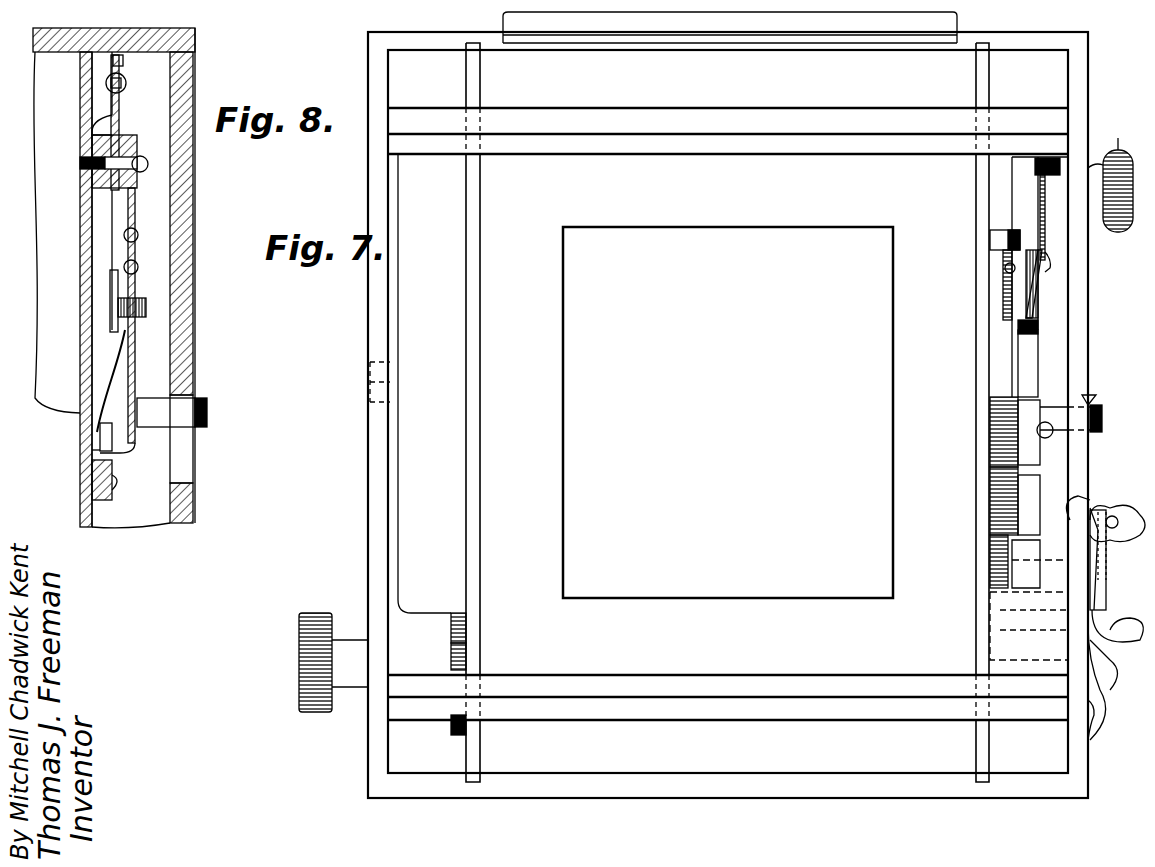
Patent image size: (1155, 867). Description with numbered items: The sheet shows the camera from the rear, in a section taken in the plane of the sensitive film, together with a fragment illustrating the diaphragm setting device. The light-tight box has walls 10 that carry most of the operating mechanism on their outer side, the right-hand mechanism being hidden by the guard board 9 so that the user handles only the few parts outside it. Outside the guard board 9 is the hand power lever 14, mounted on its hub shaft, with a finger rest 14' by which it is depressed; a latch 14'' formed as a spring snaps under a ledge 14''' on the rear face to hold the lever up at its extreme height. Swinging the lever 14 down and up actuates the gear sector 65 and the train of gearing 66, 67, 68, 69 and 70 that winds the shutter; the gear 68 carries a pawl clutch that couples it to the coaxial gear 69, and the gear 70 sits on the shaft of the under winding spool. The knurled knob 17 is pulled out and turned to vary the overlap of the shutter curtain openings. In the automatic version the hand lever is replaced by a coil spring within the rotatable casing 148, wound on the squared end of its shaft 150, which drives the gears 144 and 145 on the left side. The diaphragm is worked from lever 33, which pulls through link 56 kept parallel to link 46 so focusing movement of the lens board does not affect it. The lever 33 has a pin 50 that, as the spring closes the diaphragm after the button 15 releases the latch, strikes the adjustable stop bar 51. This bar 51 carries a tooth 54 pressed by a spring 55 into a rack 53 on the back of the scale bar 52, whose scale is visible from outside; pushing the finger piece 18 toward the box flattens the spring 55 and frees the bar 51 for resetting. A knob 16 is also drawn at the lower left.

In FIG. 8, the guard board 9 is at (193, 284).
In FIG. 7, the guard board 9 is at (1086, 320).
In FIG. 8, the camera box walls 10 is at (80, 277).
In FIG. 7, the camera box walls 10 is at (480, 352).
In FIG. 7, the hand power lever 14 is at (1121, 622).
In FIG. 7, the finger rest 14' is at (1116, 452).
In FIG. 7, the latch 14'' is at (1108, 488).
In FIG. 7, the ledge 14''' is at (1118, 545).
In FIG. 7, the button 15 is at (1090, 745).
In FIG. 7, the knob 16 is at (299, 643).
In FIG. 7, the knurled knob 17 is at (1110, 171).
In FIG. 8, the finger piece 18 is at (207, 414).
In FIG. 7, the finger piece 18 is at (1092, 402).
In FIG. 8, the lever 33 is at (118, 206).
In FIG. 8, the link 46 is at (100, 118).
In FIG. 8, the pin 50 is at (130, 300).
In FIG. 8, the stop bar 51 is at (152, 360).
In FIG. 8, the scale bar 52 is at (112, 468).
In FIG. 8, the rack 53 is at (115, 423).
In FIG. 8, the tooth 54 is at (92, 450).
In FIG. 8, the spring 55 is at (115, 365).
In FIG. 8, the link 56 is at (135, 70).
In FIG. 7, the gear sector 65 is at (990, 500).
In FIG. 7, the gear 66 is at (990, 428).
In FIG. 7, the gear 67 is at (1028, 360).
In FIG. 7, the gear 68 is at (1026, 285).
In FIG. 7, the gear 69 is at (1003, 264).
In FIG. 7, the gear 70 is at (992, 230).
In FIG. 7, the gear 144 is at (451, 660).
In FIG. 7, the gear 145 is at (451, 625).
In FIG. 7, the casing 148 is at (438, 510).
In FIG. 7, the shaft 150 is at (392, 400).